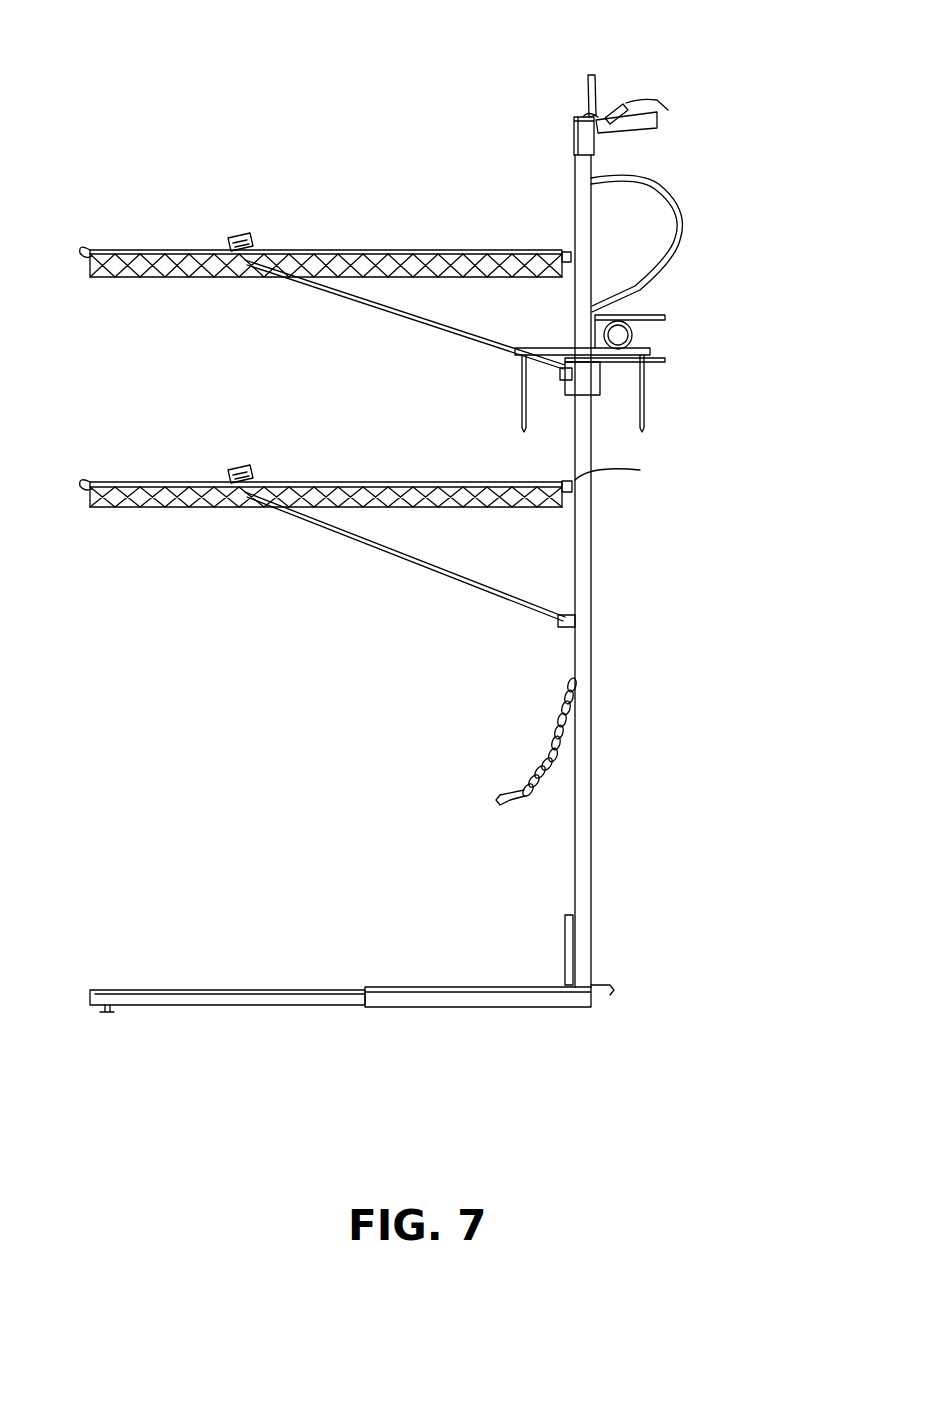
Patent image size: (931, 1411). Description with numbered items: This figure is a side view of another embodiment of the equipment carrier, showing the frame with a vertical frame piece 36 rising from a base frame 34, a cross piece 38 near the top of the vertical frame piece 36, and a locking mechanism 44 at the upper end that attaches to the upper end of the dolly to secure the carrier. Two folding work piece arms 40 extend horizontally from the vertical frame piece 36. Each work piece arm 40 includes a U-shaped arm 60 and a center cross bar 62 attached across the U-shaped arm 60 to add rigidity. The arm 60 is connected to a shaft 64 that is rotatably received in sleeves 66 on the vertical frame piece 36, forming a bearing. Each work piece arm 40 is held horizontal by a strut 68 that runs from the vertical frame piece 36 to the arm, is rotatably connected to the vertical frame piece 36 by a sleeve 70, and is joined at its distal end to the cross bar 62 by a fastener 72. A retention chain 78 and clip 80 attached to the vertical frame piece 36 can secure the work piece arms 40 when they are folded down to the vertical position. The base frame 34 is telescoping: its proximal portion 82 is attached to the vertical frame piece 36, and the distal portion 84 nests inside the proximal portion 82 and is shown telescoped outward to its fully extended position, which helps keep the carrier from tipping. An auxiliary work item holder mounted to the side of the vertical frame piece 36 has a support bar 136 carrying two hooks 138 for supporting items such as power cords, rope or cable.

The base frame 34 is at (325, 968).
The vertical frame piece 36 is at (592, 752).
The cross piece 38 is at (578, 138).
The work piece arm 40 is at (432, 355).
The locking mechanism 44 is at (650, 84).
The U-shaped arm 60 is at (321, 374).
The center cross bar 62 is at (198, 265).
The shaft 64 is at (572, 258).
The sleeve 66 is at (569, 254).
The strut 68 is at (450, 318).
The sleeve 70 is at (562, 382).
The fastener 72 is at (246, 238).
The retention chain 78 is at (550, 750).
The clip 80 is at (505, 805).
The proximal portion 82 is at (488, 1007).
The distal portion 84 is at (102, 998).
The support bar 136 is at (545, 350).
The hook 138 is at (522, 410).